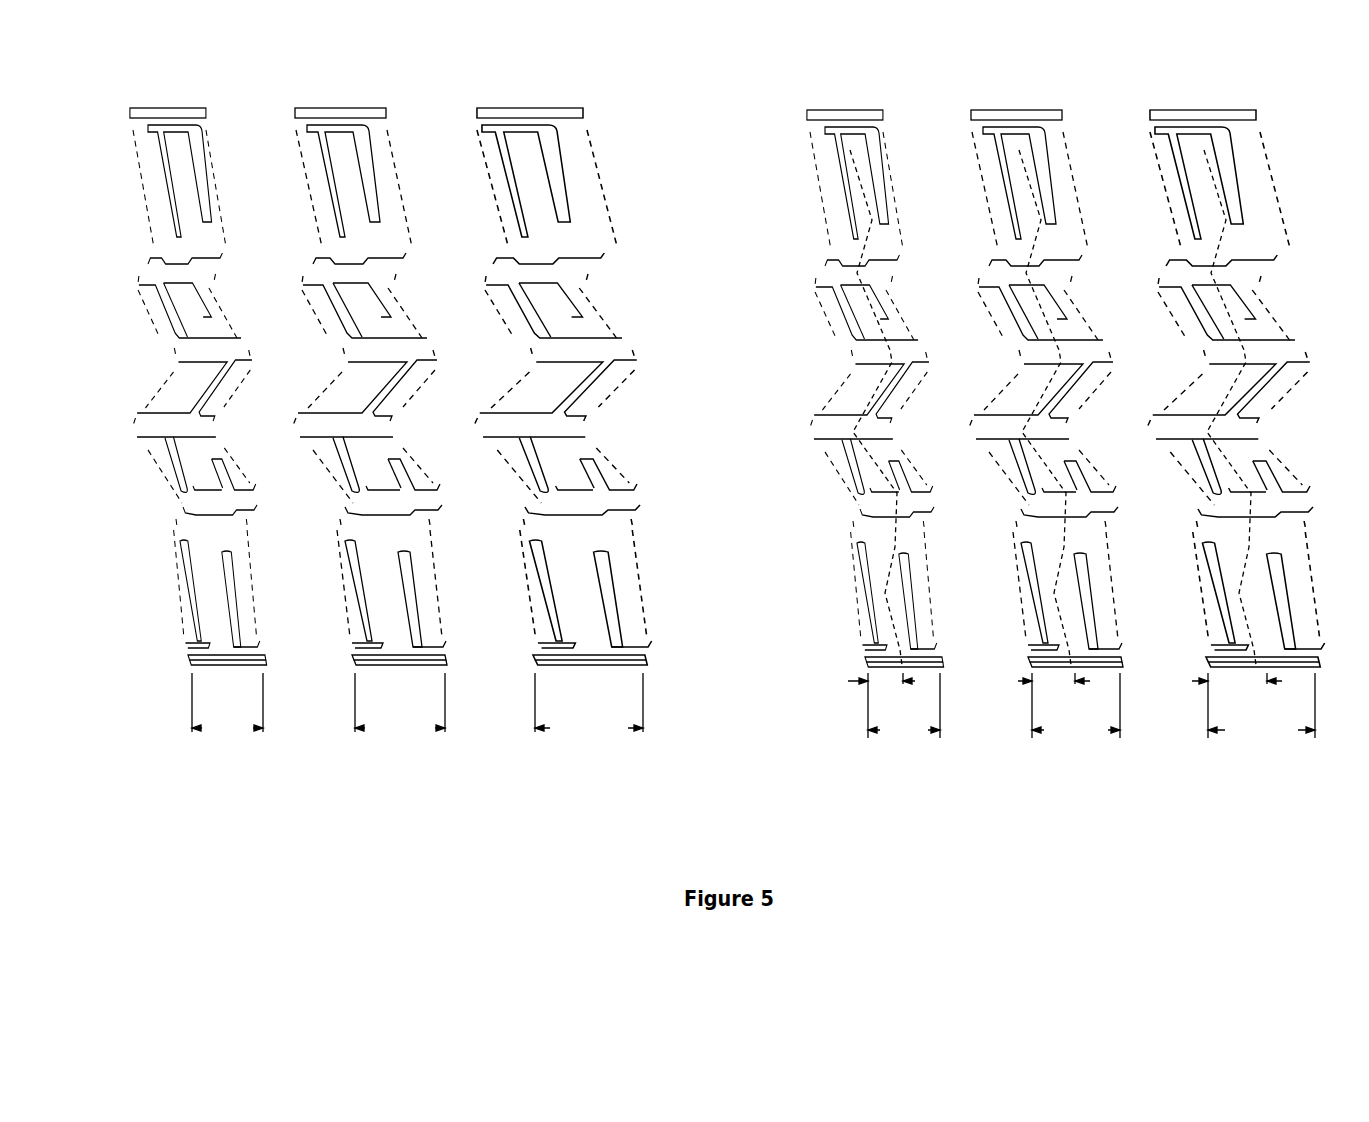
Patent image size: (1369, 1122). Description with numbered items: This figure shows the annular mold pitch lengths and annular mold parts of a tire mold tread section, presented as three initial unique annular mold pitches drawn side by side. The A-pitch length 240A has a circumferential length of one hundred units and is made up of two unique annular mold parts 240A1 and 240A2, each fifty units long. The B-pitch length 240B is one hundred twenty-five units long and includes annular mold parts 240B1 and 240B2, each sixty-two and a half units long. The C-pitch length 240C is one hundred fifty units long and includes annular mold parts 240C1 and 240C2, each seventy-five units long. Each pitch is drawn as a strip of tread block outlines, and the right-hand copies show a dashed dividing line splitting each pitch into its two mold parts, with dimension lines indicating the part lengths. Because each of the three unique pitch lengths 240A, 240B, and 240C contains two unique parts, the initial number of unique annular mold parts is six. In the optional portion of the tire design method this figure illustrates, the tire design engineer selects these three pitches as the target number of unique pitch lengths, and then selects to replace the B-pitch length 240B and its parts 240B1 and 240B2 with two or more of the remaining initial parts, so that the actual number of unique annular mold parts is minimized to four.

The A-pitch length 240A is at (172, 128).
The B-pitch length 240B is at (351, 130).
The C-pitch length 240C is at (510, 132).
The annular mold part 240A1 is at (857, 652).
The annular mold part 240A2 is at (923, 640).
The annular mold part 240B1 is at (1043, 647).
The annular mold part 240B2 is at (1108, 638).
The annular mold part 240C1 is at (1220, 648).
The annular mold part 240C2 is at (1290, 637).